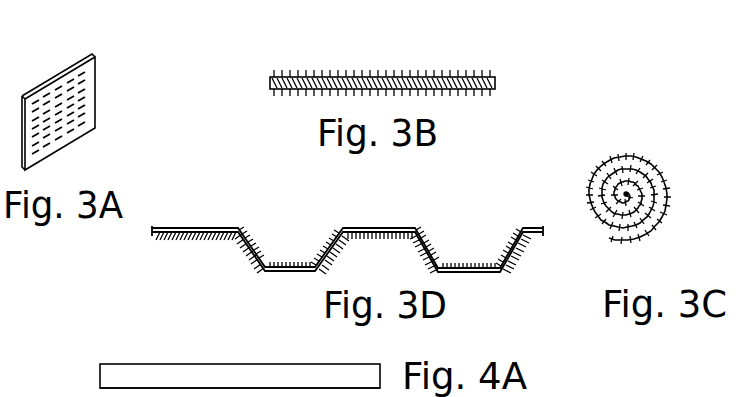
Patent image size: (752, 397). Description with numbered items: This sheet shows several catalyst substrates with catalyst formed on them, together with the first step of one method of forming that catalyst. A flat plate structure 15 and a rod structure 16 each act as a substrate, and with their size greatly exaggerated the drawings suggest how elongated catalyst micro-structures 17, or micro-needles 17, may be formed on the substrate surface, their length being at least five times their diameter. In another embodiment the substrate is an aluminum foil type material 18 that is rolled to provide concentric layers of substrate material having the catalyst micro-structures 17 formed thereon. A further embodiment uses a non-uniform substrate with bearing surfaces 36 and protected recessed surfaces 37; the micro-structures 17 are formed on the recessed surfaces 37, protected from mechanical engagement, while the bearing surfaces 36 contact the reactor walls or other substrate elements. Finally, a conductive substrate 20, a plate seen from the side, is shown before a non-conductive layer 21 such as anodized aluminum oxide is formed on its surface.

In FIG. 3A, the flat plate structure 15 is at (72, 62).
In FIG. 3B, the rod structure 16 is at (500, 83).
In FIG. 3A, the catalyst micro-structures 17 is at (91, 114).
In FIG. 3B, the catalyst micro-structures 17 is at (441, 70).
In FIG. 3C, the catalyst micro-structures 17 is at (667, 170).
In FIG. 3D, the catalyst micro-structures 17 is at (444, 239).
In FIG. 3C, the aluminum foil type material 18 is at (620, 245).
In FIG. 4A, the substrate 20 is at (152, 363).
In FIG. 4A, the non-conductive layer 21 is at (240, 391).
In FIG. 3D, the bearing surfaces 36 is at (183, 229).
In FIG. 3D, the protected recessed surfaces 37 is at (290, 253).